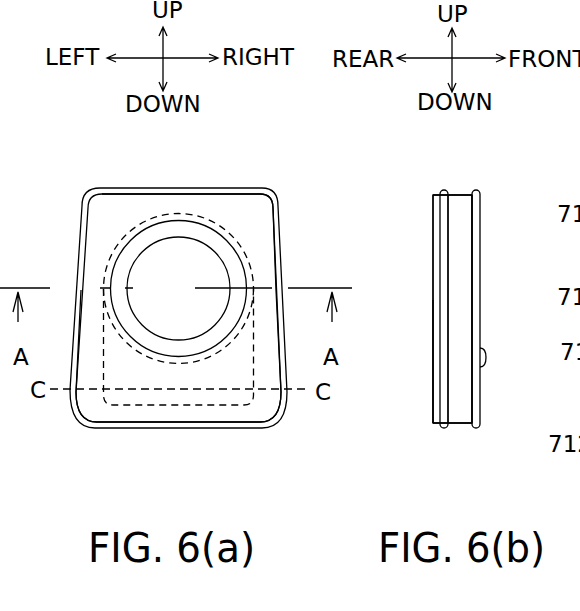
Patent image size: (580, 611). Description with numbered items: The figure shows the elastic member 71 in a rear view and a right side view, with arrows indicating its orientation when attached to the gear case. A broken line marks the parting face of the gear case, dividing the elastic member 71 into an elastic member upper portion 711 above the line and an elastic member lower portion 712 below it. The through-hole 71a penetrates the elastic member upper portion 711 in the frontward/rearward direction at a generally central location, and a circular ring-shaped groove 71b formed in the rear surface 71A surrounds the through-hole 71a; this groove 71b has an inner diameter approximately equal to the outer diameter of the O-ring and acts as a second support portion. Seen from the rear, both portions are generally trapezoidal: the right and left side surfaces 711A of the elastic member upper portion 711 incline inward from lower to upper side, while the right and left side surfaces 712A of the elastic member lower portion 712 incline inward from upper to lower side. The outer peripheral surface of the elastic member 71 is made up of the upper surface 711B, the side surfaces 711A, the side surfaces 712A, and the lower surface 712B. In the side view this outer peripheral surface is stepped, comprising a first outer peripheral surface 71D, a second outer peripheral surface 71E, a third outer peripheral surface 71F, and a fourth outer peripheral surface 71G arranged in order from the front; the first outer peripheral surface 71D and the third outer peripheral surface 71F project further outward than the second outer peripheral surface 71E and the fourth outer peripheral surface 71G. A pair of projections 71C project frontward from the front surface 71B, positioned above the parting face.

In FIG. 6A, the elastic member 71 is at (47, 183).
In FIG. 6B, the elastic member 71 is at (535, 208).
In FIG. 6A, the elastic member upper portion 711 is at (230, 203).
In FIG. 6A, the right and left side surfaces of the elastic member upper portion 711A is at (78, 223).
In FIG. 6A, the upper surface 711B is at (187, 188).
In FIG. 6B, the upper surface 711B is at (460, 193).
In FIG. 6A, the elastic member lower portion 712 is at (223, 418).
In FIG. 6A, the right and left side surfaces of the elastic member lower portion 712A is at (72, 400).
In FIG. 6A, the lower surface 712B is at (183, 432).
In FIG. 6B, the lower surface 712B is at (460, 427).
In FIG. 6A, the rear surface 71A is at (90, 372).
In FIG. 6B, the rear surface 71A is at (433, 223).
In FIG. 6B, the front surface 71B is at (480, 207).
In FIG. 6B, the projections 71C is at (488, 358).
In FIG. 6B, the first outer peripheral surface 71D is at (475, 245).
In FIG. 6B, the second outer peripheral surface 71E is at (460, 250).
In FIG. 6B, the third outer peripheral surface 71F is at (443, 248).
In FIG. 6B, the fourth outer peripheral surface 71G is at (433, 328).
In FIG. 6A, the through-hole 71a is at (218, 275).
In FIG. 6A, the circular ring-shaped groove 71b is at (143, 337).